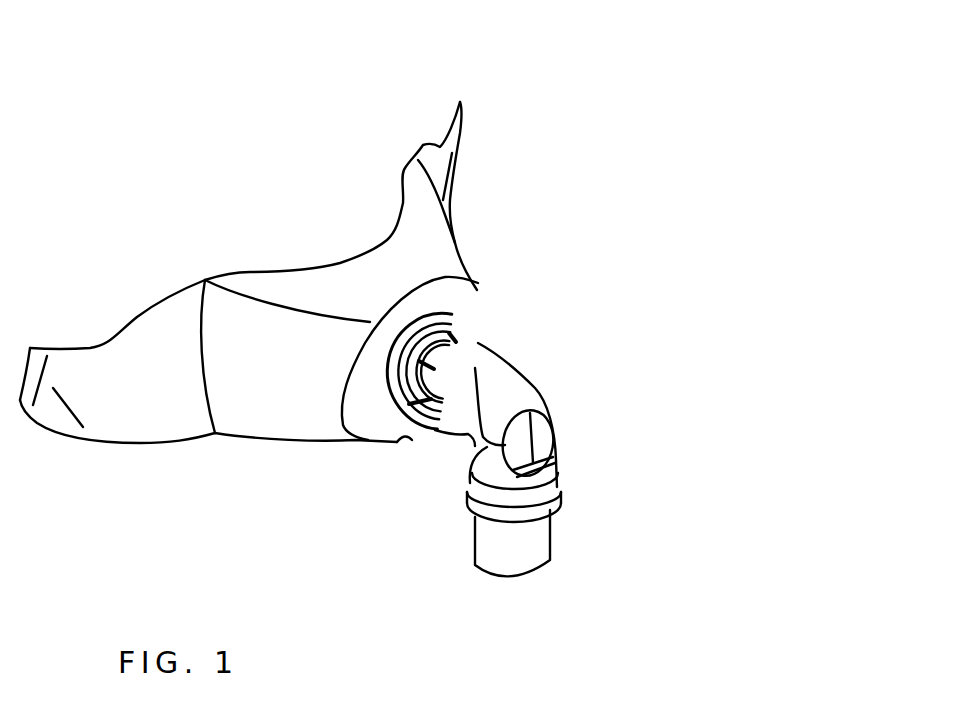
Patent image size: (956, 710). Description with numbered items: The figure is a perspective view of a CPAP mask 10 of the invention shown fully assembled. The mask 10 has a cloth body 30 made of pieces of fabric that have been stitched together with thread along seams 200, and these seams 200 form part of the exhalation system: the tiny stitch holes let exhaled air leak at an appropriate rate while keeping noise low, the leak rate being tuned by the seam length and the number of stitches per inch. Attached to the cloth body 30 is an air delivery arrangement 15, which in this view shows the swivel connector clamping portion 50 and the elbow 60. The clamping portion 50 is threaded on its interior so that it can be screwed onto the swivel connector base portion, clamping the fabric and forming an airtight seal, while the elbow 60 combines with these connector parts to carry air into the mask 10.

The mask 10 is at (513, 90).
The air delivery arrangement 15 is at (402, 485).
The cloth body 30 is at (465, 263).
The swivel connector clamping portion 50 is at (478, 340).
The elbow 60 is at (518, 392).
The seams 200 is at (238, 297).